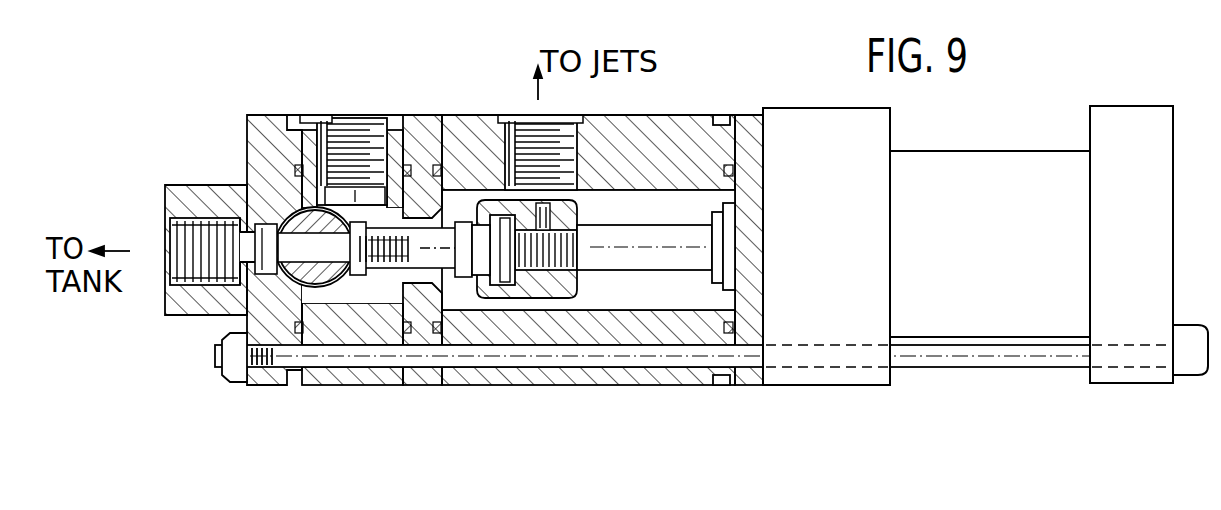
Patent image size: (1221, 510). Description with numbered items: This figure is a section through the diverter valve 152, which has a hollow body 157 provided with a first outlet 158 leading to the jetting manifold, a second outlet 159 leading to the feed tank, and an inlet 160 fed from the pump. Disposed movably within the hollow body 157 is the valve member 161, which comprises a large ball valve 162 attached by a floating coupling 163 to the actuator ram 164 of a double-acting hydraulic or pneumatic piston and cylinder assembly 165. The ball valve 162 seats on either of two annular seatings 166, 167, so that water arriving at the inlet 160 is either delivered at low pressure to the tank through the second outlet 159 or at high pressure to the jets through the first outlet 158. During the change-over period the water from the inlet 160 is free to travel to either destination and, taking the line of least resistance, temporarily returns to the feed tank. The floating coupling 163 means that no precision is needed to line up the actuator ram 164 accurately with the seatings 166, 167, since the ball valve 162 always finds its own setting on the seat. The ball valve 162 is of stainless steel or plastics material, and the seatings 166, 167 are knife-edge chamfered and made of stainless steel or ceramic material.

The diverter valve 152 is at (723, 90).
The hollow body 157 is at (638, 123).
The first outlet 158 is at (528, 112).
The second outlet 159 is at (163, 247).
The inlet 160 is at (360, 113).
The valve member 161 is at (428, 256).
The ball valve 162 is at (295, 280).
The floating coupling 163 is at (525, 287).
The actuator ram 164 is at (653, 270).
The piston and cylinder assembly 165 is at (985, 245).
The annular seating 166 is at (400, 200).
The annular seating 167 is at (290, 218).